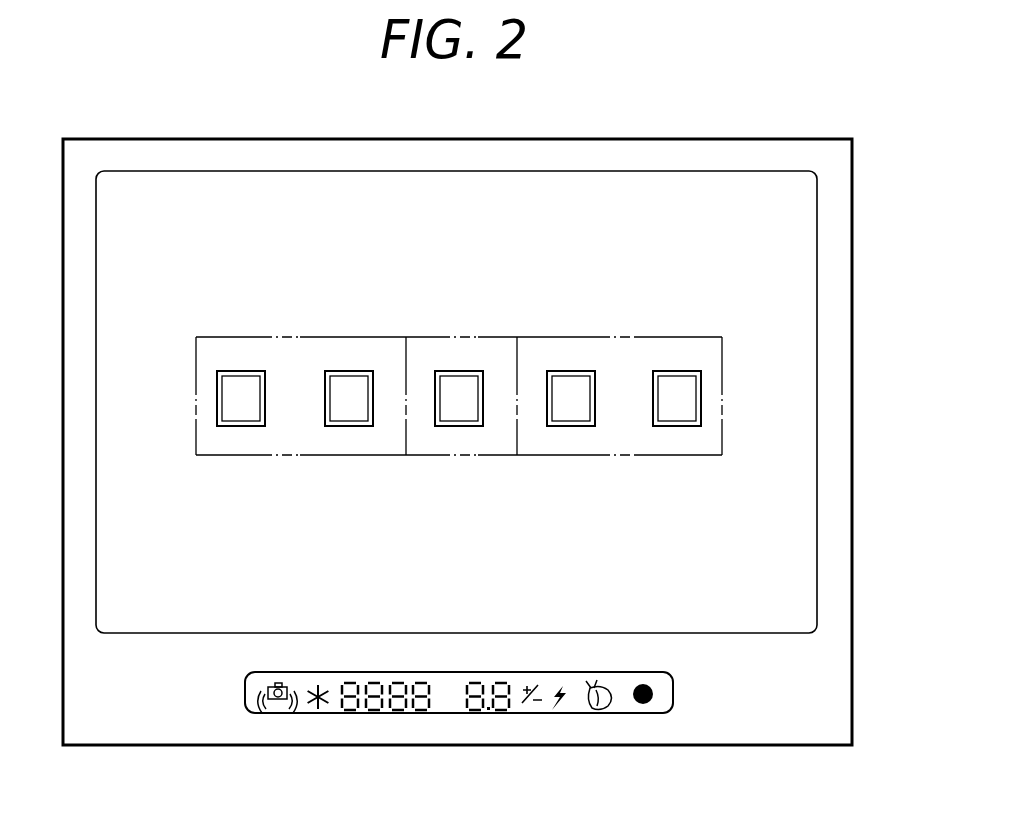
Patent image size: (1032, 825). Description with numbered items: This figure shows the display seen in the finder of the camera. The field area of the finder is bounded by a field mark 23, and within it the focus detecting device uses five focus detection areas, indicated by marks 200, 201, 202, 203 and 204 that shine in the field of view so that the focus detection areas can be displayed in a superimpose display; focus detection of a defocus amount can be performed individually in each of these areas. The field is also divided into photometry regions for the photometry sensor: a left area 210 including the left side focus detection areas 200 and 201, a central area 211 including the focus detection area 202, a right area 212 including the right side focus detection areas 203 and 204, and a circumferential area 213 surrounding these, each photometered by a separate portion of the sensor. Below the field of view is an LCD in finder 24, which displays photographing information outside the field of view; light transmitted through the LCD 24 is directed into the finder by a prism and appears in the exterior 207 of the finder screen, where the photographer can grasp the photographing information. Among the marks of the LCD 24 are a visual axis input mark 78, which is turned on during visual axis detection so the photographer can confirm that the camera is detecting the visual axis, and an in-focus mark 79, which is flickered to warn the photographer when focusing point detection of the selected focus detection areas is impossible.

The field mark 23 is at (833, 500).
The circumferential area 213 is at (815, 273).
The left area 210 is at (243, 337).
The central area 211 is at (445, 337).
The right area 212 is at (668, 337).
The focus detection area 200 is at (243, 427).
The focus detection area 201 is at (355, 427).
The focus detection area 202 is at (468, 427).
The focus detection area 203 is at (577, 427).
The focus detection area 204 is at (685, 427).
The LCD in finder 24 is at (587, 714).
The exterior of the finder screen 207 is at (337, 703).
The visual axis input mark 78 is at (603, 690).
The in-focus mark 79 is at (654, 693).